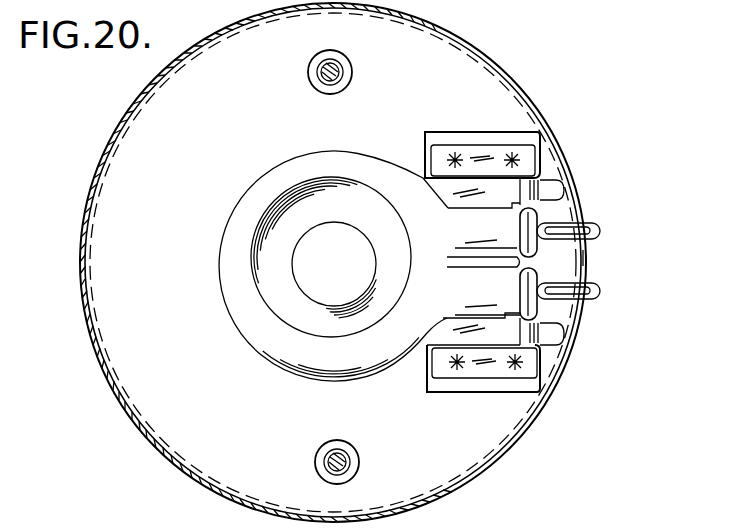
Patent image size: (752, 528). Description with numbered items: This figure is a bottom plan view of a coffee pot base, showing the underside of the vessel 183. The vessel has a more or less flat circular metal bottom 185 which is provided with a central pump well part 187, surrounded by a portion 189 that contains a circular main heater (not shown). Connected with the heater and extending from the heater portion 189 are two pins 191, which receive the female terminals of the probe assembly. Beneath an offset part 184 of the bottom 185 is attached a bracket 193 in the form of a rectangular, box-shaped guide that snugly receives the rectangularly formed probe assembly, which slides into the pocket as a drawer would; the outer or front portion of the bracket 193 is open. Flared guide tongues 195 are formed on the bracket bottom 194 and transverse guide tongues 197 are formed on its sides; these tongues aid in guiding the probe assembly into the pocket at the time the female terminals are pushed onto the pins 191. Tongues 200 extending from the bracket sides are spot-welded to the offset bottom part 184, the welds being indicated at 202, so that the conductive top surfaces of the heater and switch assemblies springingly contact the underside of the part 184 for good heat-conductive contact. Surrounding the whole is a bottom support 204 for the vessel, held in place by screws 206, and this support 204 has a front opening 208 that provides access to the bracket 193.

The vessel 183 is at (251, 20).
The offset part of the bottom 184 is at (463, 386).
The flat circular metal bottom 185 is at (157, 252).
The pump well part 187 is at (346, 263).
The heater-containing portion 189 is at (268, 344).
The pins 191 is at (598, 231).
The bracket 193 is at (420, 162).
The bracket bottom 194 is at (442, 188).
The flared guide tongues 195 is at (556, 189).
The transverse guide tongues 197 is at (546, 178).
The tongues 200 is at (526, 148).
The spot welds 202 is at (510, 156).
The bottom support 204 is at (520, 442).
The screws 206 is at (339, 63).
The front opening 208 is at (584, 260).